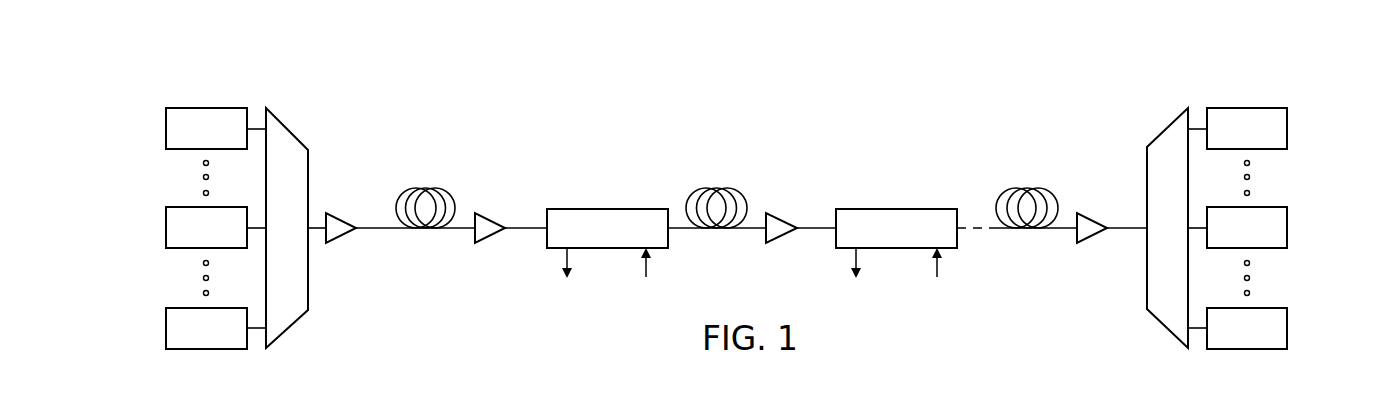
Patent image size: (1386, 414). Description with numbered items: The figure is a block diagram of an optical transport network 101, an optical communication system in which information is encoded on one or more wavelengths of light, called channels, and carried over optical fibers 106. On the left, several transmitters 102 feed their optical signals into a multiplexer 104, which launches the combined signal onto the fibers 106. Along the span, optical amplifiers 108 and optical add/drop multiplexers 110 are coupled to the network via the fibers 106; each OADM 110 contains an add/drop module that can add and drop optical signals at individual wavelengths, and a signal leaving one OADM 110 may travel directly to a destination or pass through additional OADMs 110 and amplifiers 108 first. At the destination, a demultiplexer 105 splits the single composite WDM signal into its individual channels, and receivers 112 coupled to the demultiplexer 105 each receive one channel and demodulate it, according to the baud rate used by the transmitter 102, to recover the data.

The optical transport network 101 is at (509, 116).
The transmitter 102 is at (165, 116).
The multiplexer 104 is at (290, 130).
The demultiplexer 105 is at (1167, 128).
The optical fiber 106 is at (427, 187).
The optical amplifier 108 is at (350, 219).
The optical add/drop multiplexer 110 is at (607, 207).
The receiver 112 is at (1288, 117).